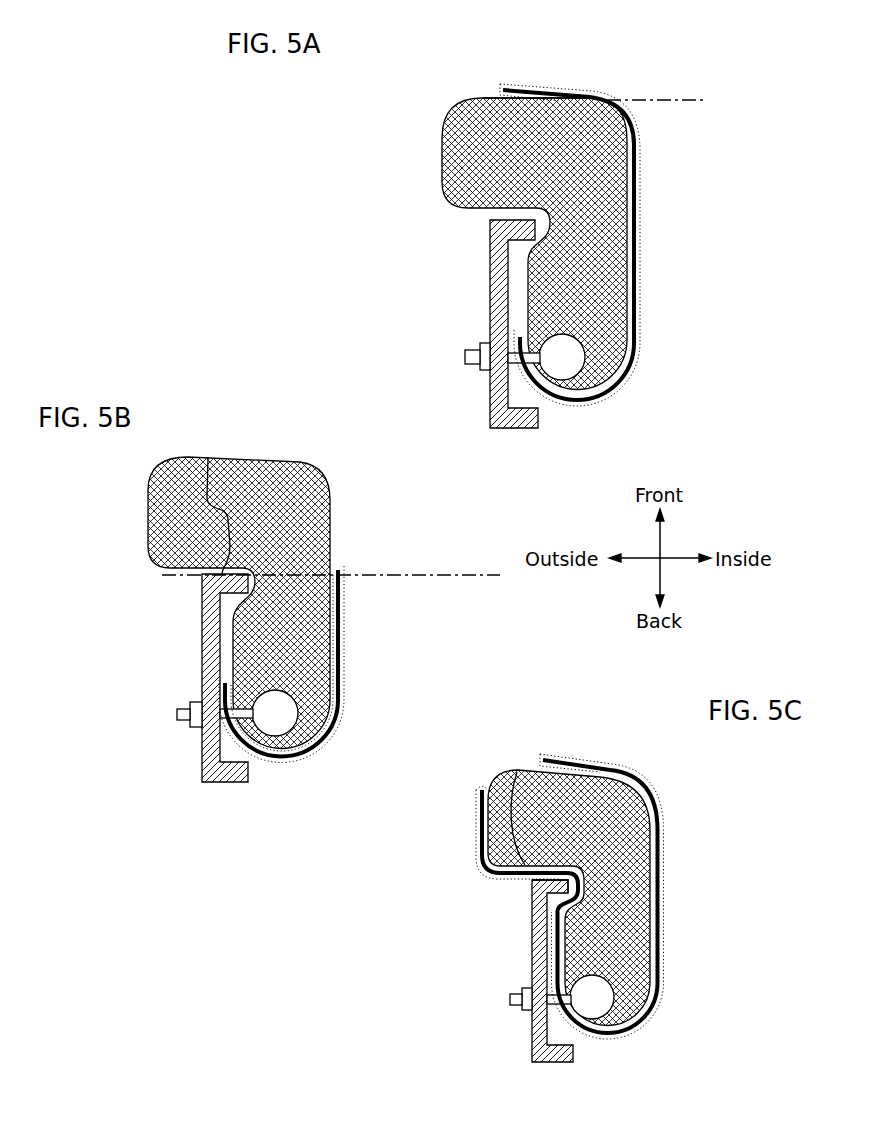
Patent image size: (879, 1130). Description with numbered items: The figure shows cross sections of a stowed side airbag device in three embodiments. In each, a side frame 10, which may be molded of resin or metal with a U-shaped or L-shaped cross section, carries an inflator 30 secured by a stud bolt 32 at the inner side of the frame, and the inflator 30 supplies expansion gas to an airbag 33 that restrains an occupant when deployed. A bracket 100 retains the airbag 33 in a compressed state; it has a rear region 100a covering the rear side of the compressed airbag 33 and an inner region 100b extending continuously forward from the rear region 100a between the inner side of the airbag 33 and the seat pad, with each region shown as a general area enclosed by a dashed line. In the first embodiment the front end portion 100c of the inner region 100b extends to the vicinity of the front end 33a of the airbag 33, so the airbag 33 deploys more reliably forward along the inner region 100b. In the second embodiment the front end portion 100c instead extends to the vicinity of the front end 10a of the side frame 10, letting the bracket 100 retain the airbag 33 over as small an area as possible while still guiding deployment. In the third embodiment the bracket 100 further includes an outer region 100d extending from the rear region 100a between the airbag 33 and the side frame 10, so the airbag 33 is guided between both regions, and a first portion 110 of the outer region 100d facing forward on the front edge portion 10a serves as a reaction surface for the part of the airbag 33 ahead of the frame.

In FIG. 5A, the side frame 10 is at (490, 420).
In FIG. 5B, the side frame 10 is at (202, 624).
In FIG. 5C, the side frame 10 is at (532, 1052).
In FIG. 5B, the front end of the side frame 10a is at (209, 457).
In FIG. 5C, the front end of the side frame 10a is at (532, 884).
In FIG. 5A, the inflator 30 is at (587, 360).
In FIG. 5B, the inflator 30 is at (303, 713).
In FIG. 5C, the inflator 30 is at (612, 1002).
In FIG. 5A, the stud bolt 32 is at (465, 357).
In FIG. 5B, the stud bolt 32 is at (177, 714).
In FIG. 5C, the stud bolt 32 is at (510, 1000).
In FIG. 5A, the airbag 33 is at (453, 188).
In FIG. 5A, the front end of the airbag 33a is at (490, 97).
In FIG. 5A, the bracket 100 is at (609, 105).
In FIG. 5B, the bracket 100 is at (349, 664).
In FIG. 5C, the bracket 100 is at (591, 761).
In FIG. 5A, the rear region 100a is at (592, 404).
In FIG. 5B, the rear region 100a is at (288, 762).
In FIG. 5C, the rear region 100a is at (628, 1037).
In FIG. 5A, the inner region 100b is at (640, 187).
In FIG. 5B, the inner region 100b is at (344, 628).
In FIG. 5C, the inner region 100b is at (665, 890).
In FIG. 5A, the front end portion 100c is at (497, 90).
In FIG. 5B, the front end portion 100c is at (340, 572).
In FIG. 5C, the front end portion 100c is at (543, 758).
In FIG. 5C, the outer region 100d is at (557, 942).
In FIG. 5C, the first portion 110 is at (520, 768).